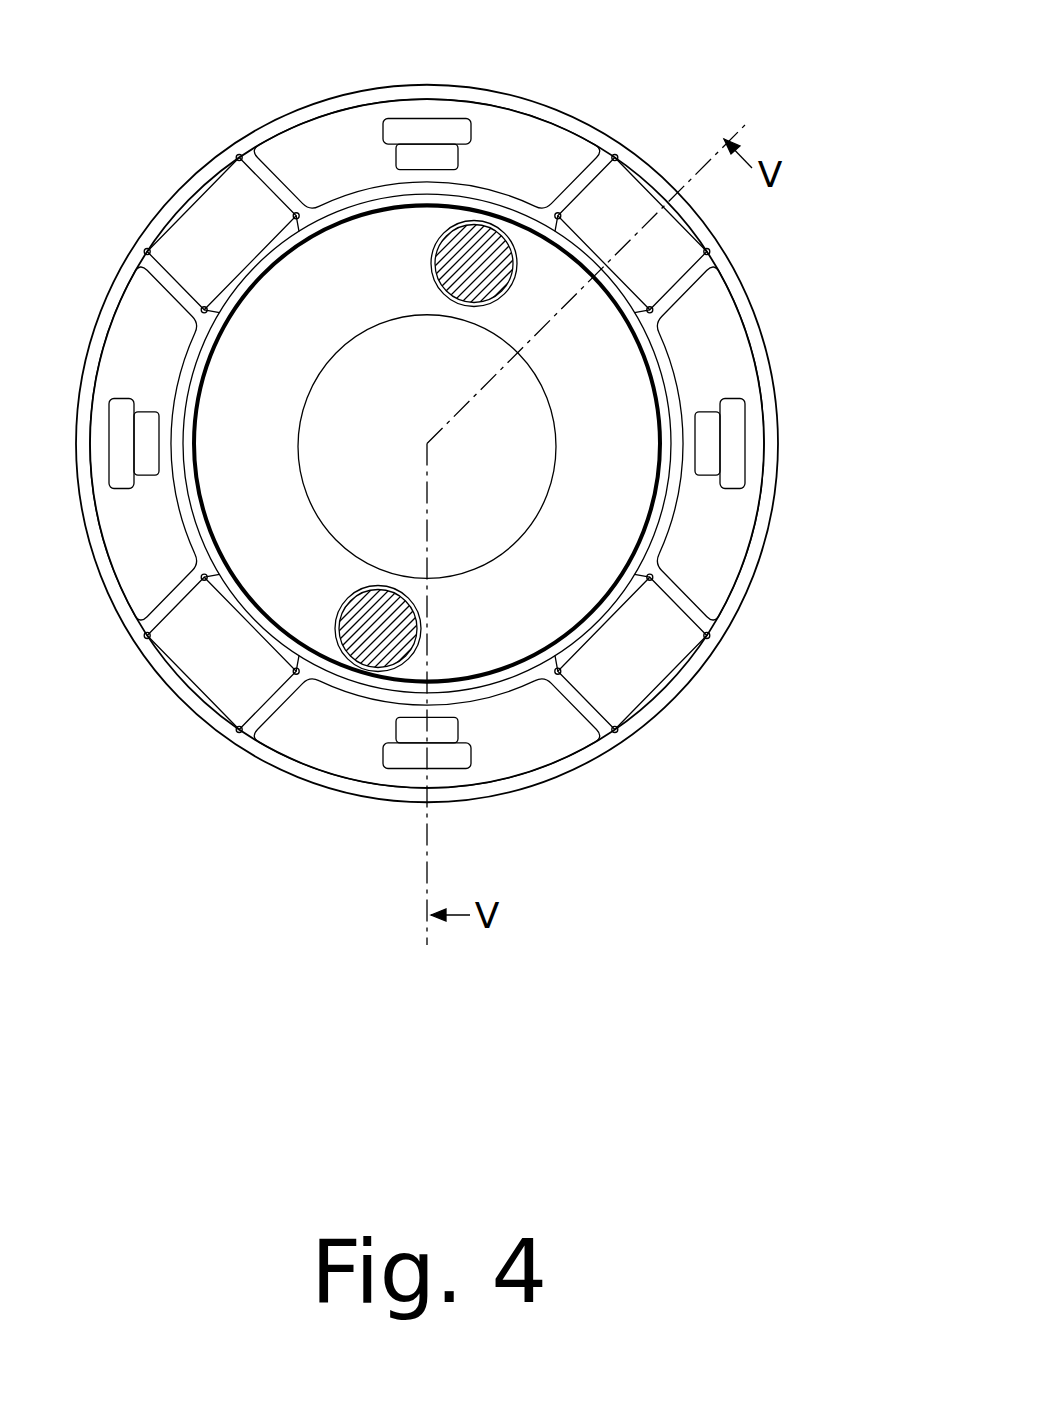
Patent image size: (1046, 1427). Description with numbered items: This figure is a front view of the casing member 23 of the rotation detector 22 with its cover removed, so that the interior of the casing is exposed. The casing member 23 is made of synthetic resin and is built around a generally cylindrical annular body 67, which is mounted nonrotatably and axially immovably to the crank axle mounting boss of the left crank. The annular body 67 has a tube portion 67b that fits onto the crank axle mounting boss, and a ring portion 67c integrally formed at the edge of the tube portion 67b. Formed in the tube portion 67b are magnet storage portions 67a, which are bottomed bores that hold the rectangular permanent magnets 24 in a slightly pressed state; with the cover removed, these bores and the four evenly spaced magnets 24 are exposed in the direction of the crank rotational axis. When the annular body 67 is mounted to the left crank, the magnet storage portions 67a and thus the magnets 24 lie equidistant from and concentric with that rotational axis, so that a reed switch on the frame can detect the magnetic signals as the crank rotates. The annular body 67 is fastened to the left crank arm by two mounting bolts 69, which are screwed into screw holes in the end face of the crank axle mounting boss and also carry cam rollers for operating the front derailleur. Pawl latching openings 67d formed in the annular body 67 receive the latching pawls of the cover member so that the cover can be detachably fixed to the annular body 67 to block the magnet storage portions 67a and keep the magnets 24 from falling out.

The rotation detector 22 is at (427, 401).
The casing member 23 is at (548, 76).
The magnets 24 is at (200, 228).
The annular body 67 is at (512, 92).
The magnet storage portions 67a is at (266, 194).
The tube portion 67b is at (198, 450).
The ring portion 67c is at (615, 405).
The pawl latching openings 67d is at (422, 148).
The mounting bolts 69 is at (440, 275).